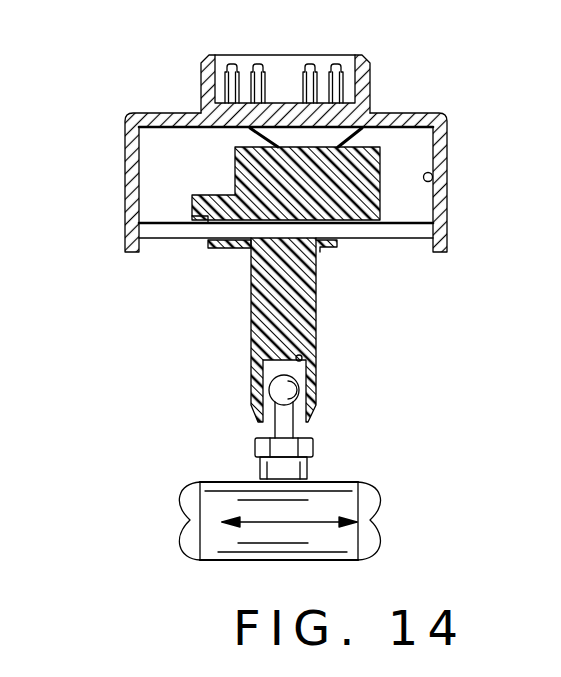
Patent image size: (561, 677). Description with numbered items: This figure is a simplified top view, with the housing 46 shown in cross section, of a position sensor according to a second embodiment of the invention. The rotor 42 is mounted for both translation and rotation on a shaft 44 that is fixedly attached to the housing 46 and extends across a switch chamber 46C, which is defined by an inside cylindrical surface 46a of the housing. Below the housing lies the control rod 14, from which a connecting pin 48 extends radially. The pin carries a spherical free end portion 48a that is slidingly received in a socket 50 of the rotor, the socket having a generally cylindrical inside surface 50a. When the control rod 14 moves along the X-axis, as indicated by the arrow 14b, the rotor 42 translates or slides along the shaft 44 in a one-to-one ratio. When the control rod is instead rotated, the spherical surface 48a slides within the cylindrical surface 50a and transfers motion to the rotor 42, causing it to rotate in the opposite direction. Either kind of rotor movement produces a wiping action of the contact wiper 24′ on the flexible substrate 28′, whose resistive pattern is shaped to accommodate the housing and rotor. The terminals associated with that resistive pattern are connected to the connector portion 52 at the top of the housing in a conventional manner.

The control rod 14 is at (222, 540).
The arrow 14b is at (290, 522).
The contact wiper 24′ is at (267, 142).
The substrate 28' is at (169, 95).
The rotor 42 is at (288, 283).
The shaft 44 is at (212, 233).
The housing 46 is at (403, 108).
The inside cylindrical surface 46a is at (432, 173).
The switch chamber 46C is at (175, 160).
The connecting pin 48 is at (292, 436).
The spherical free end portion 48a is at (282, 390).
The socket 50 is at (316, 394).
The cylindrical inside surface 50a is at (303, 357).
The connector portion 52 is at (351, 78).